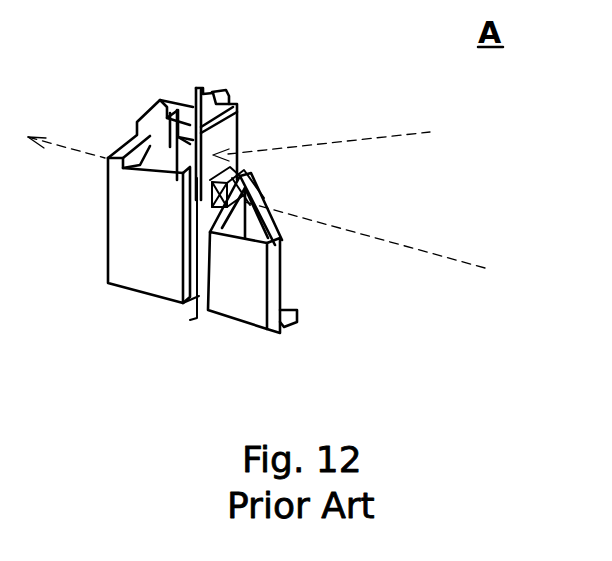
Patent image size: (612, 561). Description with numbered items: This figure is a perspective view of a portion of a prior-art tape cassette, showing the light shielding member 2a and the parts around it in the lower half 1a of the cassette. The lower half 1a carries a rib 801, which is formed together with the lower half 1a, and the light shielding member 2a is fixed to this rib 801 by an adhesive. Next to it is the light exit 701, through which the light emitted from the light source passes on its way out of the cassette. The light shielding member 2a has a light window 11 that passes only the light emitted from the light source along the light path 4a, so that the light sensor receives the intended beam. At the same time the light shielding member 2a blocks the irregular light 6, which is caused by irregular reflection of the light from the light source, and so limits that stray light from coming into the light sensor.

The light exit 701 is at (135, 135).
The rib 801 is at (197, 270).
The light shielding member 2a is at (223, 132).
The irregular light 6 is at (337, 138).
The light window 11 is at (238, 188).
The light path 4a is at (389, 249).
The lower half 1a is at (235, 290).